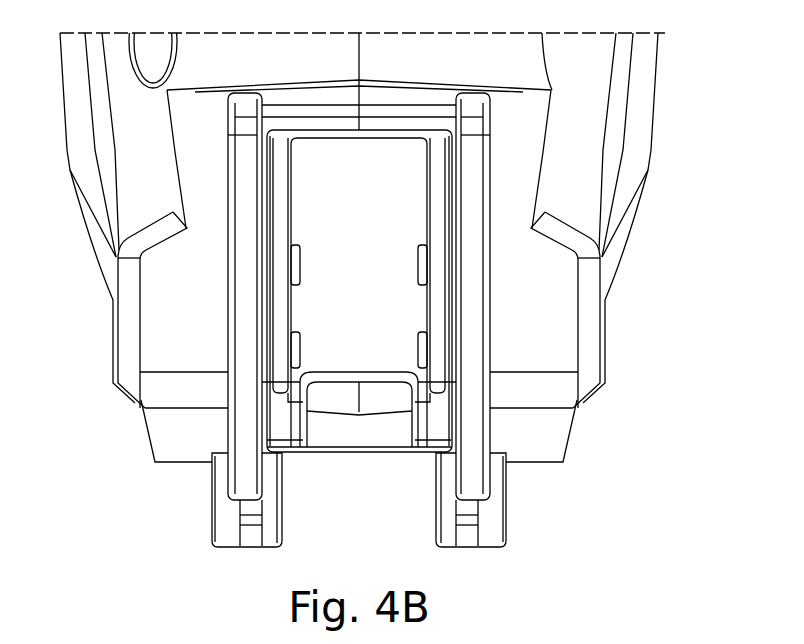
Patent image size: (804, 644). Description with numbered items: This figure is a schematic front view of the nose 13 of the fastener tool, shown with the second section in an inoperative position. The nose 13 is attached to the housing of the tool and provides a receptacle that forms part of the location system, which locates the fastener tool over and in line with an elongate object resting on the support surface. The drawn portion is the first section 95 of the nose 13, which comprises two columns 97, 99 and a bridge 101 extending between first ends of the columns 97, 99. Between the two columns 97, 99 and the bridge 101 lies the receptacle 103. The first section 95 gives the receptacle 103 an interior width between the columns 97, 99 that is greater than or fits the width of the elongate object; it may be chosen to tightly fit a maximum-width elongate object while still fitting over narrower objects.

The nose 13 is at (528, 513).
The first section 95 is at (194, 515).
The column 97 is at (480, 472).
The column 99 is at (245, 472).
The bridge 101 is at (357, 435).
The receptacle 103 is at (318, 482).